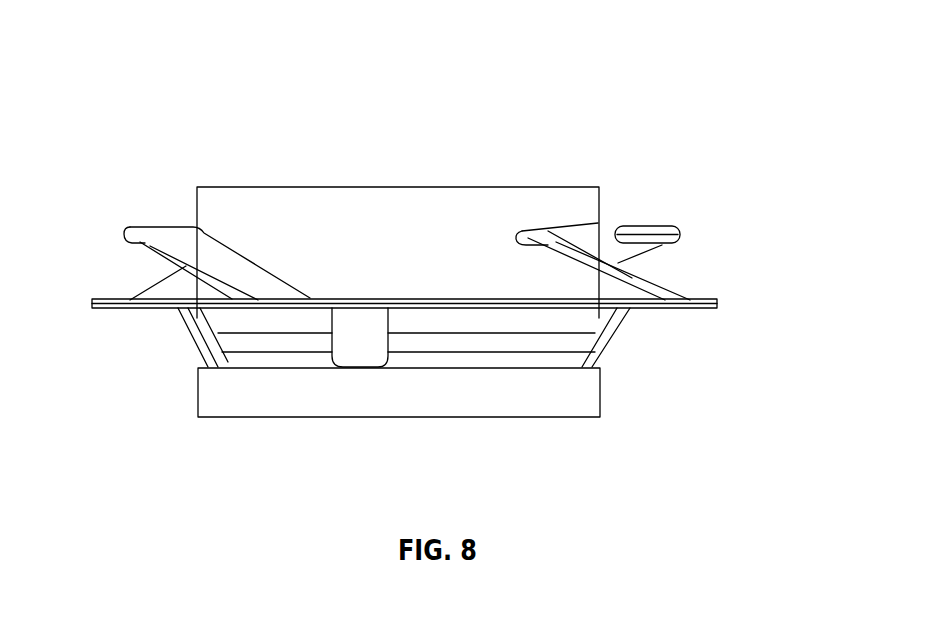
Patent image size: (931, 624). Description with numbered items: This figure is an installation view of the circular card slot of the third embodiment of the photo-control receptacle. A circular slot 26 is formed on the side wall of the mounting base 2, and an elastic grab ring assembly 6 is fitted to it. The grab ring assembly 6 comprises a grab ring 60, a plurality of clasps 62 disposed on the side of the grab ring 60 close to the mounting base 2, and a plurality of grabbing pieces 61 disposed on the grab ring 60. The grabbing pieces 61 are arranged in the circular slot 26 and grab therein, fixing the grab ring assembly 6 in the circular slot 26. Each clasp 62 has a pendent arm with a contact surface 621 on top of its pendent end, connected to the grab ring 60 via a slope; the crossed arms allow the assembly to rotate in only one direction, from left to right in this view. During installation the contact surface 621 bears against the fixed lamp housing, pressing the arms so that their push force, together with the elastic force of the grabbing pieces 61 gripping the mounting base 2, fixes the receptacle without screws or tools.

The mounting base 2 is at (468, 213).
The grab ring assembly 6 is at (168, 208).
The grab ring 60 is at (717, 305).
The grabbing pieces 61 is at (195, 335).
The clasp 62 is at (187, 243).
The contact surface 621 is at (598, 223).
The circular slot 26 is at (520, 345).